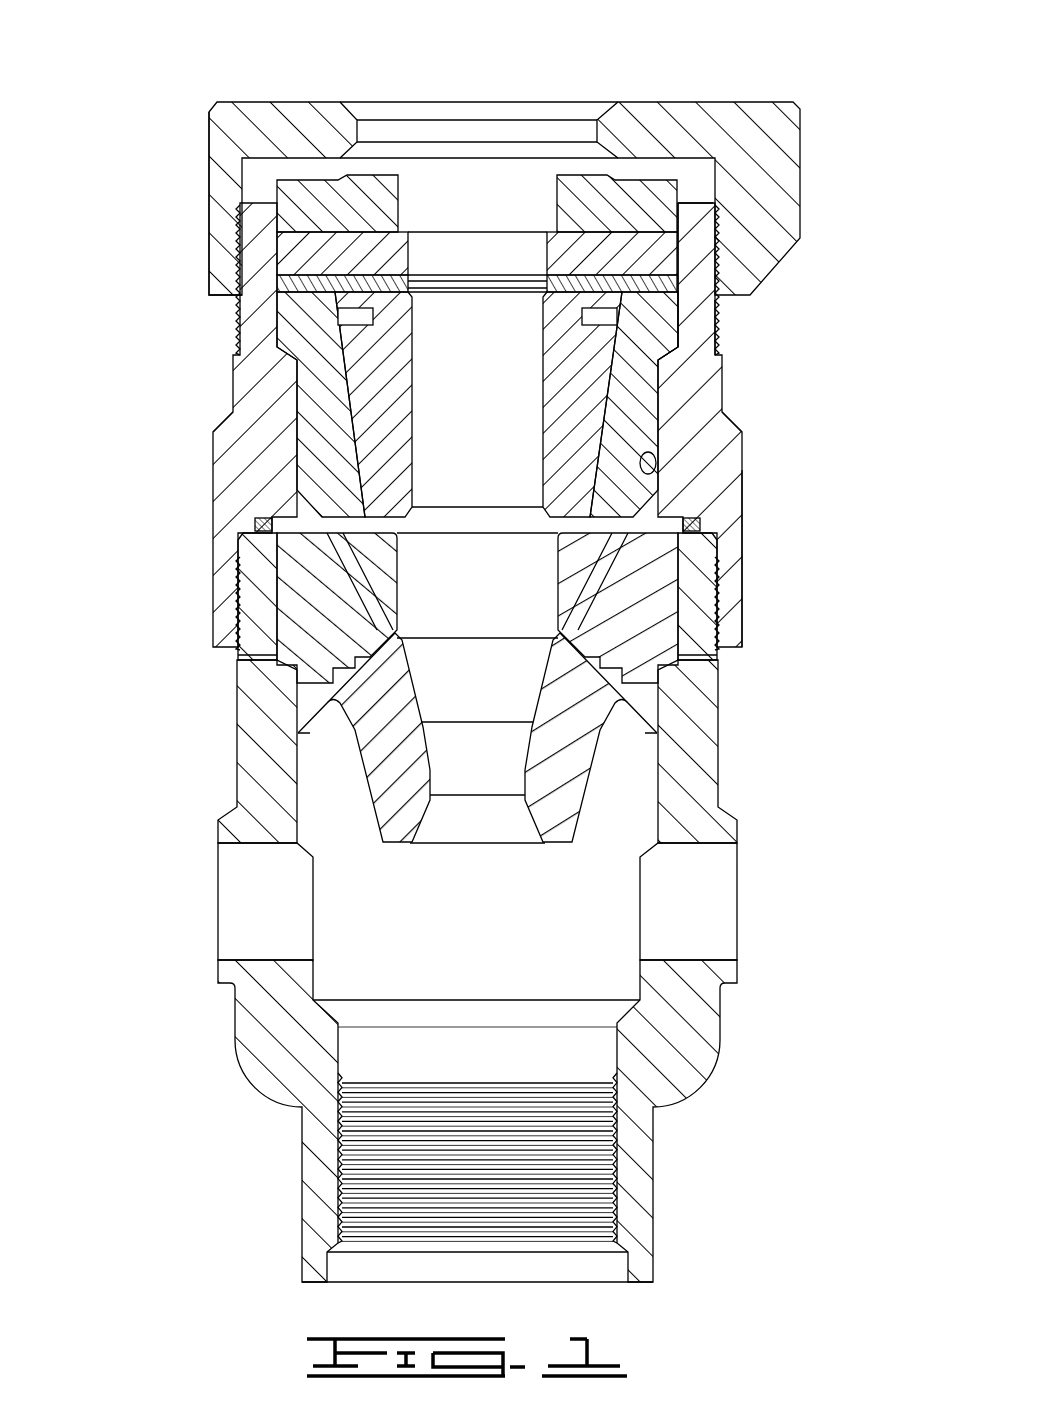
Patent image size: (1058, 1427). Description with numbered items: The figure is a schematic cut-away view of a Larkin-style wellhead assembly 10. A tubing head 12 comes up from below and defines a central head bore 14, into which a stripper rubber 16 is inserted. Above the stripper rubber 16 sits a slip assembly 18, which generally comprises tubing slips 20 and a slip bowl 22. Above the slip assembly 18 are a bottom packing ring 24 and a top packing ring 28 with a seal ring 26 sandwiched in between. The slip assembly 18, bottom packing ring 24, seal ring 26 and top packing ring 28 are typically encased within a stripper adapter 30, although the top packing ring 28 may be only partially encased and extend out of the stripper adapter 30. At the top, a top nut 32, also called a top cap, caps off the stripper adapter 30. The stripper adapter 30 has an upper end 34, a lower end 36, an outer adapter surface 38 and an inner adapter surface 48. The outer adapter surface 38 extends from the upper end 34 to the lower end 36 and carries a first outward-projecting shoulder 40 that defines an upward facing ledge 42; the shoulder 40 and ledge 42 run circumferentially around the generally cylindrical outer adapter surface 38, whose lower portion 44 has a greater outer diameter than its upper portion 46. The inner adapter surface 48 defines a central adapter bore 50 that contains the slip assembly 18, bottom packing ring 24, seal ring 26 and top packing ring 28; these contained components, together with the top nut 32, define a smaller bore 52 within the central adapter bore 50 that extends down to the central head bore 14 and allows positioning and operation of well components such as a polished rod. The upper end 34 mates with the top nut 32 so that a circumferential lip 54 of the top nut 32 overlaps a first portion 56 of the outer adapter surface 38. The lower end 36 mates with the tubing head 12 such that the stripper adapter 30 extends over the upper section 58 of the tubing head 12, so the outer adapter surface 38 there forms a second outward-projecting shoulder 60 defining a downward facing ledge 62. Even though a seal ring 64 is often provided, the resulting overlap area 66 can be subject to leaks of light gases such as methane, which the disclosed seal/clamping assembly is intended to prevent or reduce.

The wellhead assembly 10 is at (775, 806).
The tubing head 12 is at (300, 1208).
The central head bore 14 is at (595, 1060).
The stripper rubber 16 is at (360, 753).
The slip assembly 18 is at (623, 415).
The tubing slips 20 is at (360, 425).
The slip bowl 22 is at (652, 382).
The bottom packing ring 24 is at (277, 283).
The seal ring 26 is at (275, 236).
The top packing ring 28 is at (335, 188).
The stripper adapter 30 is at (247, 378).
The top nut 32 is at (682, 102).
The upper end 34 is at (693, 202).
The lower end 36 is at (742, 625).
The outer adapter surface 38 is at (715, 350).
The first outward-projecting shoulder 40 is at (739, 413).
The upward facing ledge 42 is at (217, 422).
The lower portion 44 is at (742, 528).
The upper portion 46 is at (243, 320).
The inner adapter surface 48 is at (657, 475).
The central adapter bore 50 is at (503, 340).
The smaller bore 52 is at (445, 322).
The circumferential lip 54 is at (209, 148).
The first portion 56 is at (712, 255).
The upper section 58 is at (717, 585).
The second outward-projecting shoulder 60 is at (188, 612).
The downward facing ledge 62 is at (230, 647).
The seal ring 64 is at (257, 525).
The overlap area 66 is at (213, 580).